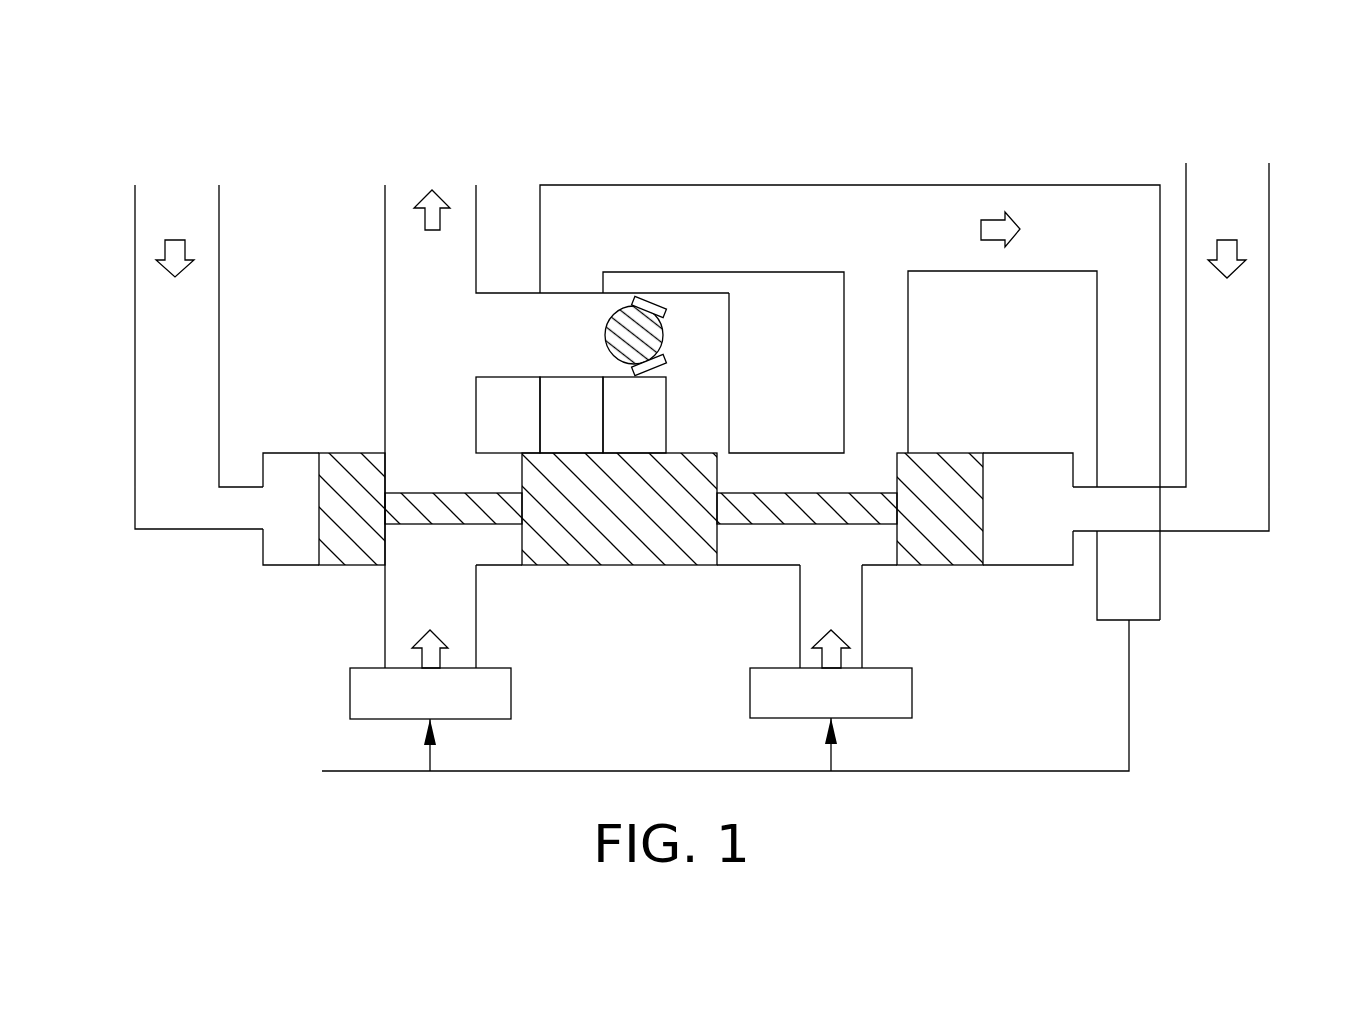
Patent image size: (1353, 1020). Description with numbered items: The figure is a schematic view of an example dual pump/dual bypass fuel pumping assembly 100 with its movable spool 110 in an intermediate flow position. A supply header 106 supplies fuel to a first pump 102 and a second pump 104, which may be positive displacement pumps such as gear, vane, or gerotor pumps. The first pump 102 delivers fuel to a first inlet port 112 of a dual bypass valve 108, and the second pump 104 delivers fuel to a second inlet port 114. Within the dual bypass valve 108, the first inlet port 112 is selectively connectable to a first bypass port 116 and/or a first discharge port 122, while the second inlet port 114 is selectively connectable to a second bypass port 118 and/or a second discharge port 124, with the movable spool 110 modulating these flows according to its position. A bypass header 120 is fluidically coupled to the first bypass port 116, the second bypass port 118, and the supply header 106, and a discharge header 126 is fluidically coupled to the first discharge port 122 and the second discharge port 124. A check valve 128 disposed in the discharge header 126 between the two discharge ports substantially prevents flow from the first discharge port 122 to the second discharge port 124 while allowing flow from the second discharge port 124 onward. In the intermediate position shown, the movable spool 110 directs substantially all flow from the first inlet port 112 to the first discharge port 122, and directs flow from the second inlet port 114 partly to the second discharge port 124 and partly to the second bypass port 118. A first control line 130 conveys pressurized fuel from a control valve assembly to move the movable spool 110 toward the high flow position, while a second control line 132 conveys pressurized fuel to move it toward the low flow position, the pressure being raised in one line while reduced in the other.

The dual pump/dual bypass fuel pumping assembly 100 is at (1052, 61).
The first pump 102 is at (511, 690).
The second pump 104 is at (912, 692).
The supply header 106 is at (412, 771).
The dual bypass valve 108 is at (975, 598).
The movable spool 110 is at (968, 521).
The first inlet port 112 is at (448, 571).
The second inlet port 114 is at (846, 567).
The first bypass port 116 is at (576, 446).
The second bypass port 118 is at (862, 445).
The bypass header 120 is at (742, 212).
The first discharge port 122 is at (452, 418).
The second discharge port 124 is at (694, 446).
The discharge header 126 is at (412, 225).
The check valve 128 is at (646, 337).
The first control line 130 is at (193, 521).
The second control line 132 is at (1189, 517).